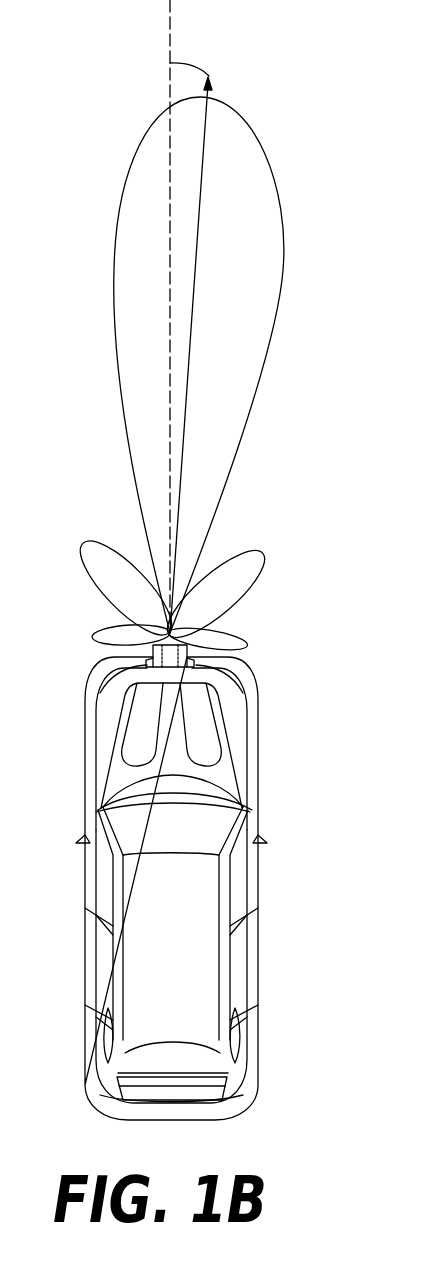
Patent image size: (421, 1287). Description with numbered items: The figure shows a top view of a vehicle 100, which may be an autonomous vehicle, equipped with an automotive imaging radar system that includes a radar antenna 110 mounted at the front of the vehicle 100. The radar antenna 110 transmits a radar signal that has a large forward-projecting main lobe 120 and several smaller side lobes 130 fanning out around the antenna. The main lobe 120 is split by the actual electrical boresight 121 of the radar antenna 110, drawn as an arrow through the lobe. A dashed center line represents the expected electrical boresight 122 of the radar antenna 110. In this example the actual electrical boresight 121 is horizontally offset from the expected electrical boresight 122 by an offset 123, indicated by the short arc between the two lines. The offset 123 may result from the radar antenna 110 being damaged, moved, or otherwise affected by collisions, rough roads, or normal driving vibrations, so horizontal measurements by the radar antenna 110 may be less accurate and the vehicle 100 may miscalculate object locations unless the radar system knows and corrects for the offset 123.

The vehicle 100 is at (257, 962).
The radar antenna 110 is at (195, 650).
The main lobe 120 is at (217, 352).
The actual electrical boresight 121 is at (207, 133).
The expected electrical boresight 122 is at (170, 53).
The offset 123 is at (205, 65).
The side lobes 130 is at (253, 565).